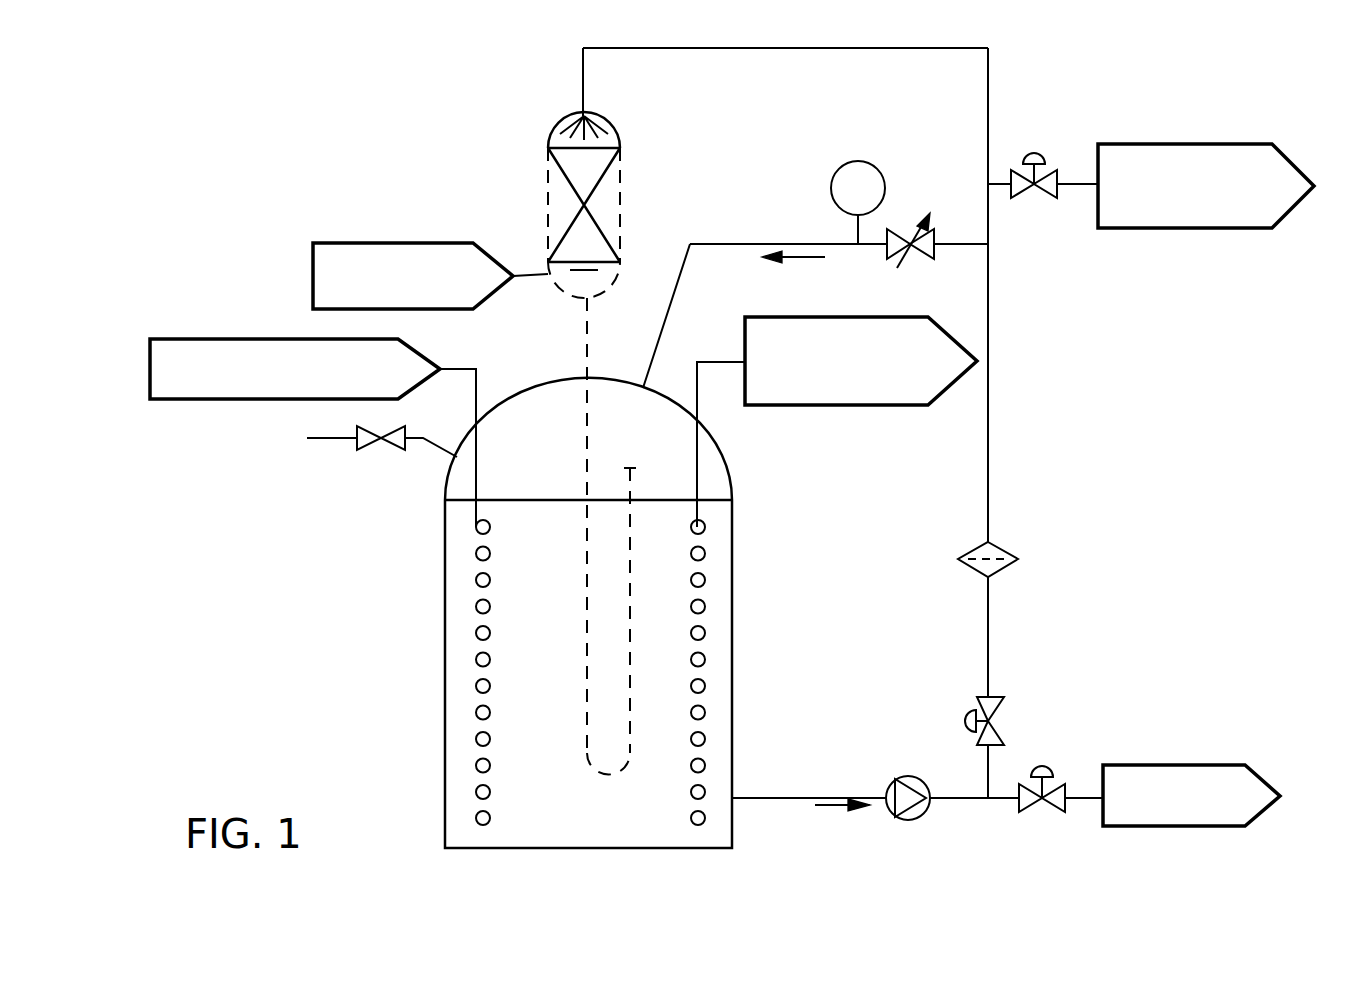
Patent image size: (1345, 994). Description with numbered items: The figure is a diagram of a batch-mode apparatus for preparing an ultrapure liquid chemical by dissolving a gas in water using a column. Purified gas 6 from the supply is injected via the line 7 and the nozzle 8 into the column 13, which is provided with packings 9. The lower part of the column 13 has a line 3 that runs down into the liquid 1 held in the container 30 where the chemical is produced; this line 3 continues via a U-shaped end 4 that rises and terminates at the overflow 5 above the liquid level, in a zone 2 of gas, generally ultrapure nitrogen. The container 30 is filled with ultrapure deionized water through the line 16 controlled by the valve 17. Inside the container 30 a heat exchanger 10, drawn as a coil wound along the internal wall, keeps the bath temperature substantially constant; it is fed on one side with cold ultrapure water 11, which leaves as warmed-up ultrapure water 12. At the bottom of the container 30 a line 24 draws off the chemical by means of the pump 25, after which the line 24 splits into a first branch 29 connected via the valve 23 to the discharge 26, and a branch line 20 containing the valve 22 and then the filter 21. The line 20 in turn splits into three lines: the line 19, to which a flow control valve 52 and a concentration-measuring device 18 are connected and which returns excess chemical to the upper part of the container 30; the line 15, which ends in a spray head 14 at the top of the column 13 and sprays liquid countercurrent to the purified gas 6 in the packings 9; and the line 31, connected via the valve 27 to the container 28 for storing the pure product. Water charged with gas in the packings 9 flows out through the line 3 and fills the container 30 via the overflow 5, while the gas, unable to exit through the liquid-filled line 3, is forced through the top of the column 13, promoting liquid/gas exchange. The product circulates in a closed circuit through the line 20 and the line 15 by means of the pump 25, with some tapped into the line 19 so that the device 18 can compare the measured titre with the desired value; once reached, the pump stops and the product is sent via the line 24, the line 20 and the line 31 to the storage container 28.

The liquid 1 is at (468, 740).
The zone of gas 2 is at (722, 478).
The line 3 is at (585, 410).
The U-shaped end 4 is at (605, 772).
The overflow 5 is at (632, 476).
The purified gas 6 is at (430, 243).
The line 7 is at (537, 276).
The nozzle 8 is at (598, 270).
The packings 9 is at (615, 196).
The heat exchanger 10 is at (475, 580).
The cold ultrapure water 11 is at (240, 339).
The warmed-up ultrapure water 12 is at (900, 405).
The column 13 is at (548, 170).
The spray head 14 is at (596, 124).
The line 15 is at (770, 48).
The line 16 is at (418, 436).
The valve 17 is at (381, 450).
The concentration-measuring device 18 is at (870, 162).
The line 19 is at (765, 244).
The line 20 is at (990, 468).
The filter 21 is at (972, 576).
The valve 22 is at (1000, 722).
The valve 23 is at (1045, 812).
The line 24 is at (785, 800).
The pump 25 is at (900, 820).
The discharge 26 is at (1175, 765).
The valve 27 is at (1040, 165).
The container for storing the pure product 28 is at (1185, 144).
The first branch 29 is at (1003, 800).
The container 30 is at (733, 628).
The line 31 is at (1075, 186).
The flow control valve 52 is at (903, 262).